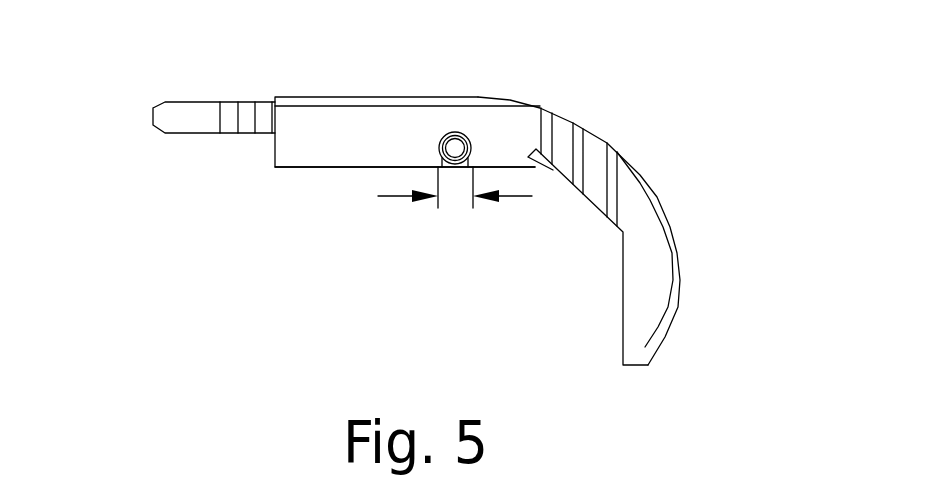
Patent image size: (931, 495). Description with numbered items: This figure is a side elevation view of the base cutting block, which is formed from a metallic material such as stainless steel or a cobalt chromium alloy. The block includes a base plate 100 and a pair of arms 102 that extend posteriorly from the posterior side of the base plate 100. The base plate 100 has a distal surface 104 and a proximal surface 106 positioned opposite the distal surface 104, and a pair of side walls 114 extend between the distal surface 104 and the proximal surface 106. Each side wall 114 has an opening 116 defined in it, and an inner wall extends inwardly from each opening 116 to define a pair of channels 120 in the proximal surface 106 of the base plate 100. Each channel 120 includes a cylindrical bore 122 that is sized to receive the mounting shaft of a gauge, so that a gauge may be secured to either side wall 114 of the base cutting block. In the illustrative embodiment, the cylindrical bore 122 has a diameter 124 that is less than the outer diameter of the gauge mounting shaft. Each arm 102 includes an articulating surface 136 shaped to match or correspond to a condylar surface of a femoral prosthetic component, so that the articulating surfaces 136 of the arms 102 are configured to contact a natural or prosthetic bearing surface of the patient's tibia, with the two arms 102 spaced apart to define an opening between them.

The base plate 100 is at (315, 96).
The arm 102 is at (663, 247).
The distal surface 104 is at (387, 95).
The proximal surface 106 is at (327, 157).
The side wall 114 is at (283, 155).
The opening 116 is at (440, 147).
The channel 120 is at (455, 216).
The cylindrical bore 122 is at (458, 126).
The diameter 124 is at (378, 197).
The articulating surface 136 is at (658, 200).